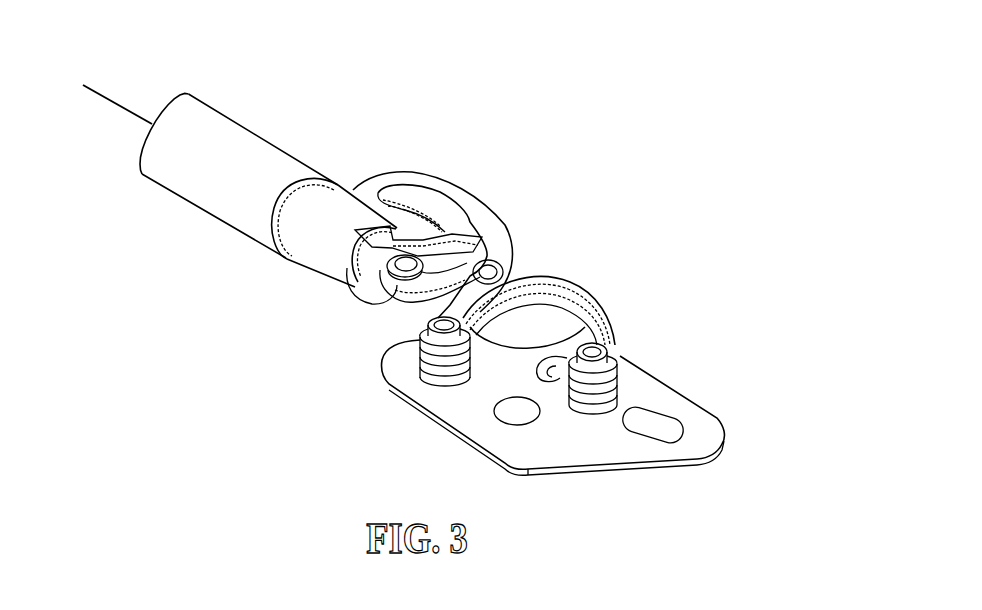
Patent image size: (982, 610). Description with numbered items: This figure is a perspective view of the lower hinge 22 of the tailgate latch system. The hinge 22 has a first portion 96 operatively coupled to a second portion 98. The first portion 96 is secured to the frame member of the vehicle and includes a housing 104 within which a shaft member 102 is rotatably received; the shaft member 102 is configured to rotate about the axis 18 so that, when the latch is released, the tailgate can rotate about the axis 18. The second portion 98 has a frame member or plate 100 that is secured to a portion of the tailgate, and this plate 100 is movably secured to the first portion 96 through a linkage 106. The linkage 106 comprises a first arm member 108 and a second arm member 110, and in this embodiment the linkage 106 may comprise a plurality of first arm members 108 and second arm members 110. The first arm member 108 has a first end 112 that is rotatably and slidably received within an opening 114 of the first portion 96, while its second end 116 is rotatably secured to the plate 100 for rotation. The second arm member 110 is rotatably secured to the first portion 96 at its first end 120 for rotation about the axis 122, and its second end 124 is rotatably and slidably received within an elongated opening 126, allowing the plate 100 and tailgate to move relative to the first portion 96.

The axis 18 is at (100, 118).
The lower hinge 22 is at (403, 284).
The first portion 96 is at (240, 204).
The second portion 98 is at (508, 388).
The plate 100 is at (420, 387).
The shaft member 102 is at (317, 247).
The housing 104 is at (243, 157).
The linkage 106 is at (491, 222).
The first arm member 108 is at (480, 217).
The second arm member 110 is at (587, 310).
The first end 112 is at (403, 190).
The opening 114 is at (420, 227).
The second end 116 is at (447, 378).
The first end 120 is at (367, 277).
The axis 122 is at (405, 266).
The second end 124 is at (615, 351).
The elongated opening 126 is at (539, 456).